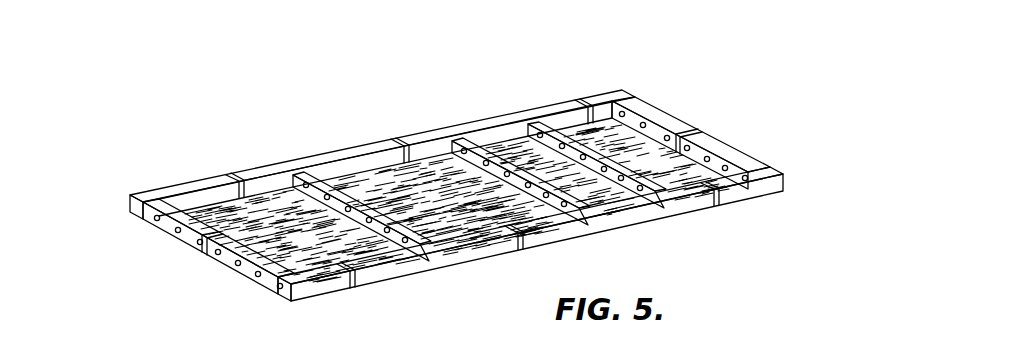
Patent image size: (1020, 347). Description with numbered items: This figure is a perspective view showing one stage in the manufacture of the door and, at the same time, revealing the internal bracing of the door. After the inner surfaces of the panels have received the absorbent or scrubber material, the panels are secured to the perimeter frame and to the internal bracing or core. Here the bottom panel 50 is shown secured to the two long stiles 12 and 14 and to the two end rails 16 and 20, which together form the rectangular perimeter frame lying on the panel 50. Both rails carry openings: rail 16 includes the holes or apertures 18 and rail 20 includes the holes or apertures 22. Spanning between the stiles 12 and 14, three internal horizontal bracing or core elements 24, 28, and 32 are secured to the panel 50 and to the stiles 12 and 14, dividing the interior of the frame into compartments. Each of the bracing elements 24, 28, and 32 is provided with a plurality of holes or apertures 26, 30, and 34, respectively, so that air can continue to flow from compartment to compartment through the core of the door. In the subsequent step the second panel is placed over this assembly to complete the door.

The stile 12 is at (750, 195).
The stile 14 is at (357, 149).
The rail 16 is at (733, 162).
The holes or apertures 18 is at (645, 126).
The rail 20 is at (202, 231).
The holes or apertures 22 is at (258, 276).
The internal horizontal bracing element 24 is at (539, 118).
The holes or apertures 26 is at (623, 180).
The internal horizontal bracing element 28 is at (465, 140).
The holes or apertures 30 is at (545, 197).
The internal horizontal bracing element 32 is at (318, 184).
The holes or apertures 34 is at (387, 232).
The bottom panel 50 is at (261, 215).